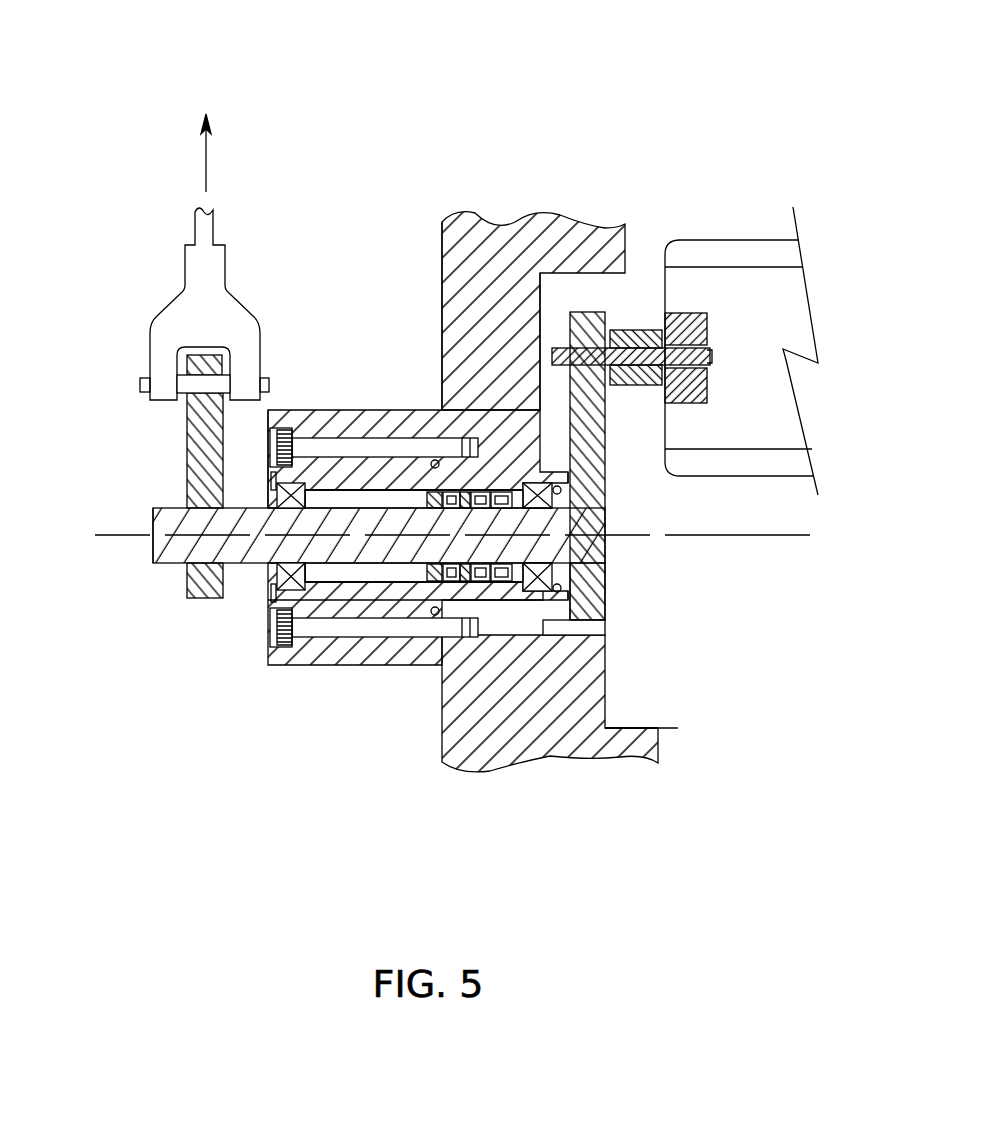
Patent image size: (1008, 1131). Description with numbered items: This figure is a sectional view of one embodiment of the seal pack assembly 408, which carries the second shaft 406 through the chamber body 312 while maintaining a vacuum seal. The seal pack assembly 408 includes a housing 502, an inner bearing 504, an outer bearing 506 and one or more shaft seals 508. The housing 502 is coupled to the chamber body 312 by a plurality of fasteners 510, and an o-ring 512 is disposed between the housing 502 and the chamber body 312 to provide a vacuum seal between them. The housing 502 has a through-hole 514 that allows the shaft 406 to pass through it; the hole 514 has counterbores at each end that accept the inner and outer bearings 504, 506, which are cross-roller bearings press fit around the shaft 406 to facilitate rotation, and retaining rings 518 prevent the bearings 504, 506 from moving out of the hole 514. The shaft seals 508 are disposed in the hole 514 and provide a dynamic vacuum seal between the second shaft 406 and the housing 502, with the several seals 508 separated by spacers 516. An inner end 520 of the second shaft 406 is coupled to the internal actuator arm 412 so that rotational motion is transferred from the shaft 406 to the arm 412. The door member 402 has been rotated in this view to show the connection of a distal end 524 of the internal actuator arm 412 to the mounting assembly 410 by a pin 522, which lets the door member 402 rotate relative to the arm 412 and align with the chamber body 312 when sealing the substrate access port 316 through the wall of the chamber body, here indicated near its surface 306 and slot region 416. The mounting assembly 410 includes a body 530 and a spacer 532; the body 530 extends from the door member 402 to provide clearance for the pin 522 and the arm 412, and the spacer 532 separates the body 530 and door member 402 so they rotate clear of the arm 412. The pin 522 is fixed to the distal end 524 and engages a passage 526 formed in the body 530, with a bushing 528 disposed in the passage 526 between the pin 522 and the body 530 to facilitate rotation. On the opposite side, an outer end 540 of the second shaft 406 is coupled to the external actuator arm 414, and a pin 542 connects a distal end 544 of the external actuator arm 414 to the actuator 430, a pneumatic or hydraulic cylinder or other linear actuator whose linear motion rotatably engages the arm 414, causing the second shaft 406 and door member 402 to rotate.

The wall surface 306 is at (442, 300).
The chamber body 312 is at (440, 229).
The substrate access port 316 is at (663, 744).
The door member 402 is at (752, 250).
The second shaft 406 is at (153, 520).
The seal pack assembly 408 is at (355, 349).
The mounting assembly 410 is at (705, 392).
The internal actuator arm 412 is at (600, 597).
The external actuator arm 414 is at (186, 452).
The wall slot 416 is at (577, 272).
The actuator 430 is at (213, 106).
The housing 502 is at (380, 420).
The inner bearing 504 is at (545, 505).
The outer bearing 506 is at (298, 455).
The shaft seals 508 is at (470, 527).
The fasteners 510 is at (323, 625).
The o-ring 512 is at (414, 627).
The through-hole 514 is at (284, 645).
The spacers 516 is at (545, 583).
The retaining rings 518 is at (563, 505).
The inner end 520 is at (607, 547).
The pin 522 is at (553, 350).
The distal end 524 is at (597, 312).
The passage 526 is at (818, 362).
The bushing 528 is at (705, 376).
The body 530 is at (705, 325).
The spacer 532 is at (645, 330).
The outer end 540 is at (153, 550).
The pin 542 is at (140, 386).
The distal end 544 is at (178, 342).